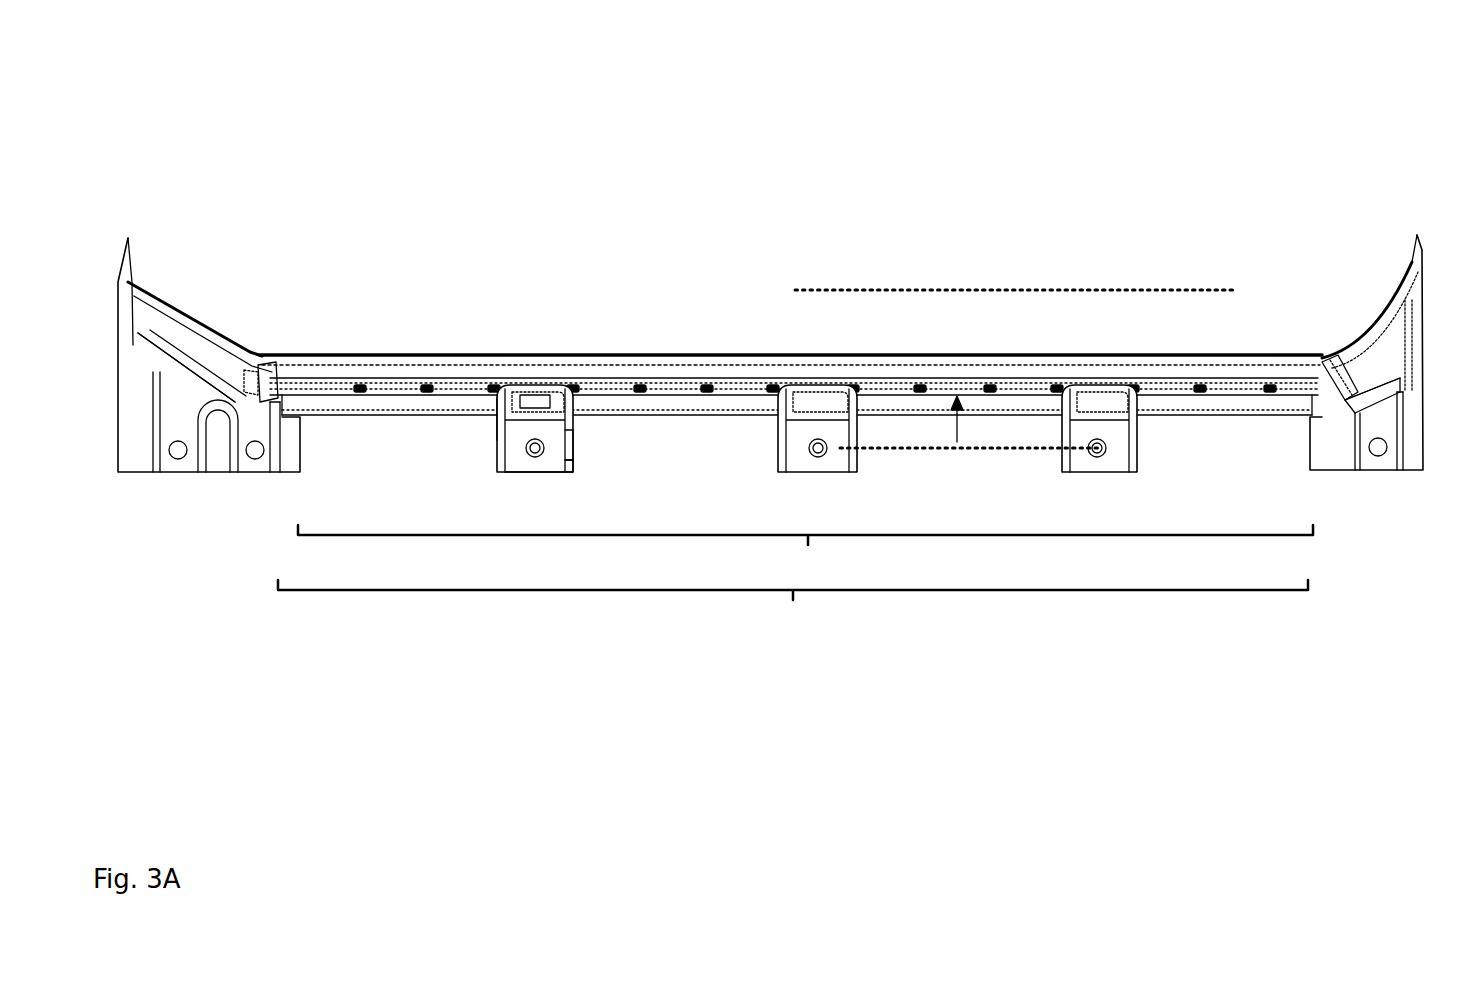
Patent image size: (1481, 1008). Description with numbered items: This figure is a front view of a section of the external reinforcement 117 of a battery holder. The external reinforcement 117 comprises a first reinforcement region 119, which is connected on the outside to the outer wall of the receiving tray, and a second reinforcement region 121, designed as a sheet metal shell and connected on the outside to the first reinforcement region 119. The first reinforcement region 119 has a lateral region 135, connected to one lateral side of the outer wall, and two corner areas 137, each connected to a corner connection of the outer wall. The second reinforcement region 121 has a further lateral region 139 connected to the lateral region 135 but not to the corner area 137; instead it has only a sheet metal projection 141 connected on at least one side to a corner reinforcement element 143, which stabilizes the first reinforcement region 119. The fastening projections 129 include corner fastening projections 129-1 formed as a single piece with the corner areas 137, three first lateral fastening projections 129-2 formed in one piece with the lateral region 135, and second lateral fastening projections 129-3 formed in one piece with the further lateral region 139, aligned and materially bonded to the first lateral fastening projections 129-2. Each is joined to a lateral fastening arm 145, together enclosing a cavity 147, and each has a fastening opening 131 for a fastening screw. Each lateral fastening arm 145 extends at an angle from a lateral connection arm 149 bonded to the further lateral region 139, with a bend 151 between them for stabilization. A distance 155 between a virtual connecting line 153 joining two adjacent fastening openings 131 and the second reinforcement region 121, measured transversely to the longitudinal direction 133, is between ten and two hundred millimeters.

The external reinforcement 117 is at (243, 121).
The first reinforcement region 119 is at (566, 353).
The second reinforcement region 121 is at (388, 398).
The fastening projections 129 is at (190, 398).
The corner fastening projections 129-1 is at (836, 397).
The first lateral fastening projections 129-2 is at (576, 460).
The second lateral fastening projections 129-3 is at (572, 445).
The fastening opening 131 is at (255, 460).
The longitudinal direction 133 is at (1022, 290).
The lateral region 135 is at (798, 600).
The corner areas 137 is at (122, 580).
The further lateral region 139 is at (812, 543).
The sheet metal projection 141 is at (1350, 378).
The corner reinforcement element 143 is at (1382, 373).
The lateral fastening arm 145 is at (523, 430).
The cavity 147 is at (548, 472).
The lateral connection arm 149 is at (538, 405).
The bend 151 is at (497, 418).
The virtual connecting line 153 is at (1017, 452).
The distance 155 is at (956, 442).